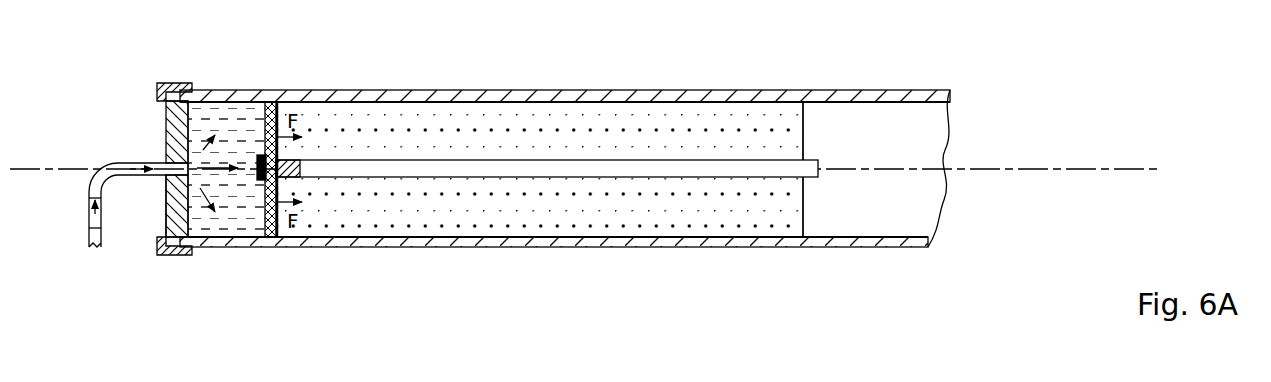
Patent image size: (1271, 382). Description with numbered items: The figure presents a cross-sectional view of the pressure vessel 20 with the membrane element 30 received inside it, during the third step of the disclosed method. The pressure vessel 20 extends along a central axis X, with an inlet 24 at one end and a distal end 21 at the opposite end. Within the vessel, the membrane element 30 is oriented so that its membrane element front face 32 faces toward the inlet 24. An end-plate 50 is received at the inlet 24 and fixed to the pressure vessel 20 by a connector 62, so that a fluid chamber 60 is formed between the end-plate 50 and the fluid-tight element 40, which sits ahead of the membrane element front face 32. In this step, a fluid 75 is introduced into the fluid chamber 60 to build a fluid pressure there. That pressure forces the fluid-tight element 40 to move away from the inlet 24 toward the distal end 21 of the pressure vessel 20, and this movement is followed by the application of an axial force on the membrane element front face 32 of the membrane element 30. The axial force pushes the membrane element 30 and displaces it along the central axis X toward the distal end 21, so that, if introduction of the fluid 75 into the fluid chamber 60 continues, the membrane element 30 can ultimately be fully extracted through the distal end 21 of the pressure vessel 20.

The pressure vessel 20 is at (586, 94).
The distal end 21 is at (803, 90).
The inlet 24 is at (158, 98).
The membrane element 30 is at (660, 127).
The membrane element front face 32 is at (280, 108).
The fluid-tight element 40 is at (272, 100).
The end-plate 50 is at (196, 100).
The fluid chamber 60 is at (237, 218).
The connector 62 is at (165, 82).
The fluid 75 is at (157, 170).
The central axis X is at (1108, 168).